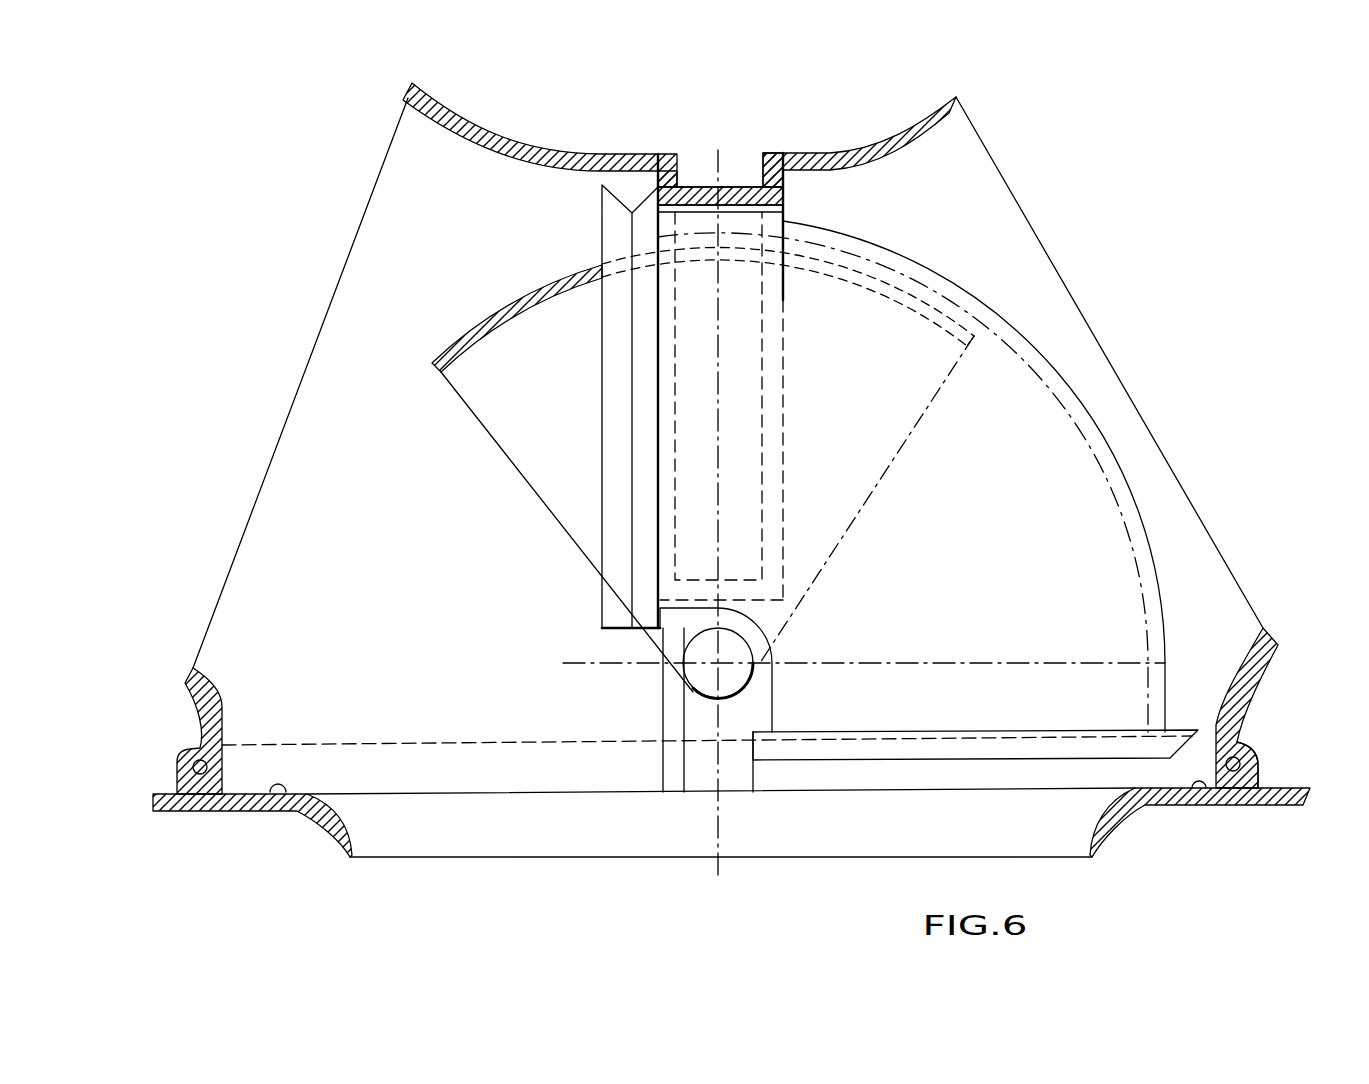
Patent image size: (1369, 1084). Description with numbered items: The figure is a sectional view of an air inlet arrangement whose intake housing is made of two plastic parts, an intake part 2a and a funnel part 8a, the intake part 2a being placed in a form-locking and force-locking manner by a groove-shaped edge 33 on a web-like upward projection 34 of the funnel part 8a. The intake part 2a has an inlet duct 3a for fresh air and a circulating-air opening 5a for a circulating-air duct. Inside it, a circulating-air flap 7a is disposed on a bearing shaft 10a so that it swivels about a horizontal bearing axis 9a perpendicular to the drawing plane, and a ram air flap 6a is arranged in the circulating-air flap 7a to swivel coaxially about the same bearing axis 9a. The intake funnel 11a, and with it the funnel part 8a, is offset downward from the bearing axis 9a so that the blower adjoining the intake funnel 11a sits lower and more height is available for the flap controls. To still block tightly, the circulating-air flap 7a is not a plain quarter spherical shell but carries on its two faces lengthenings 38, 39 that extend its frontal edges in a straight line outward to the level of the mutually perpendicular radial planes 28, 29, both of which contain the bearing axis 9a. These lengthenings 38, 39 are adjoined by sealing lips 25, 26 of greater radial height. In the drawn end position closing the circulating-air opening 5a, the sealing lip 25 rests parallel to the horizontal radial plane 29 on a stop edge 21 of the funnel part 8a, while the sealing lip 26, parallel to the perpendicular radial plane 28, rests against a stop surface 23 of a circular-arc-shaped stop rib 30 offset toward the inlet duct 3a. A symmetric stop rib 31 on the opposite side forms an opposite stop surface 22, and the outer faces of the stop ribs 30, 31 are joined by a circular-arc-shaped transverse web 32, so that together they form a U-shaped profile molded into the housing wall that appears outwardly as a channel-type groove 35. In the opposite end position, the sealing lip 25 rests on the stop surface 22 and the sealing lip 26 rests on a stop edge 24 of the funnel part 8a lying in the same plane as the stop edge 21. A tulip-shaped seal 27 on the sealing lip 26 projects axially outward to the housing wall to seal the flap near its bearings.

The intake part 2a is at (537, 148).
The inlet duct 3a is at (323, 446).
The circulating-air opening 5a is at (995, 228).
The ram air flap 6a is at (503, 303).
The circulating-air flap 7a is at (1075, 447).
The funnel part 8a is at (1287, 787).
The bearing axis 9a is at (672, 700).
The bearing shaft 10a is at (676, 657).
The intake funnel 11a is at (1112, 818).
The stop edge 21 is at (1193, 805).
The stop surface 22 is at (758, 228).
The stop surface 23 is at (648, 154).
The stop edge 24 is at (284, 810).
The sealing lip 25 is at (957, 770).
The sealing lip 26 is at (613, 400).
The tulip-shaped seal 27 is at (760, 705).
The perpendicular radial plane 28 is at (718, 878).
The horizontal radial plane 29 is at (800, 660).
The stop rib 30 is at (680, 187).
The stop rib 31 is at (758, 178).
The transverse web 32 is at (783, 237).
The groove-shaped edge 33 is at (1237, 745).
The projection 34 is at (1237, 805).
The channel-type groove 35 is at (728, 152).
The lengthening 38 is at (992, 707).
The lengthening 39 is at (712, 397).